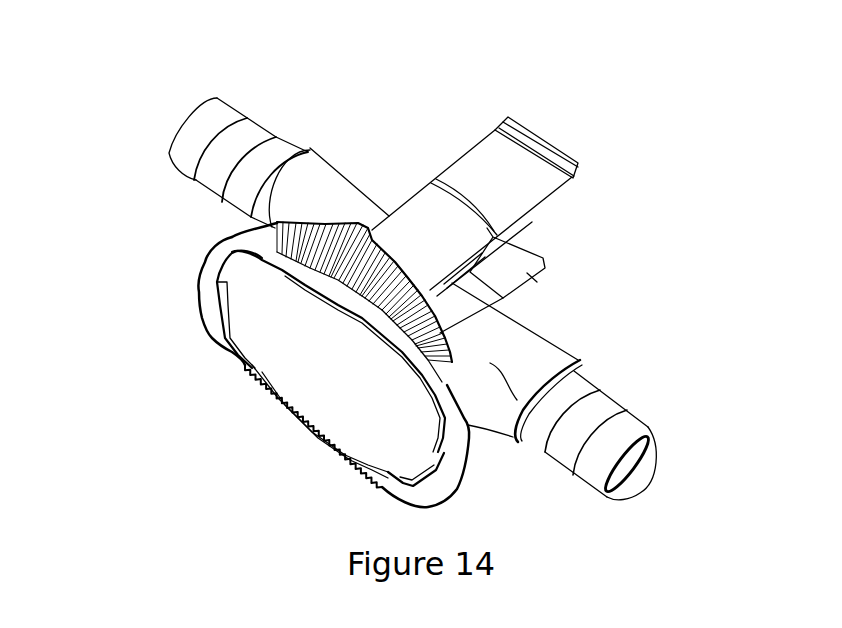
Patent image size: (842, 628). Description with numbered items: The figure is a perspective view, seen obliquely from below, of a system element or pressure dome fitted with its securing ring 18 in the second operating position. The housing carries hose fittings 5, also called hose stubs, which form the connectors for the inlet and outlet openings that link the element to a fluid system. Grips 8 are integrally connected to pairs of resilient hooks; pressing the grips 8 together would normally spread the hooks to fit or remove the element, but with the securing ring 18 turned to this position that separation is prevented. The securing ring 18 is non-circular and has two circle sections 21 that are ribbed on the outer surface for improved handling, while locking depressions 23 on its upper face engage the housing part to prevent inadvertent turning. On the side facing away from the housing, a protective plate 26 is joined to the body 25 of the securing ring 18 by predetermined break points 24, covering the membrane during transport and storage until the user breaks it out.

The hose fitting 5 is at (197, 127).
The grip 8 is at (536, 141).
The securing ring 18 is at (191, 335).
The circle section 21 is at (322, 227).
The locking depression 23 is at (482, 452).
The predetermined break point 24 is at (220, 285).
The body of the securing ring 25 is at (467, 365).
The protective plate 26 is at (308, 358).